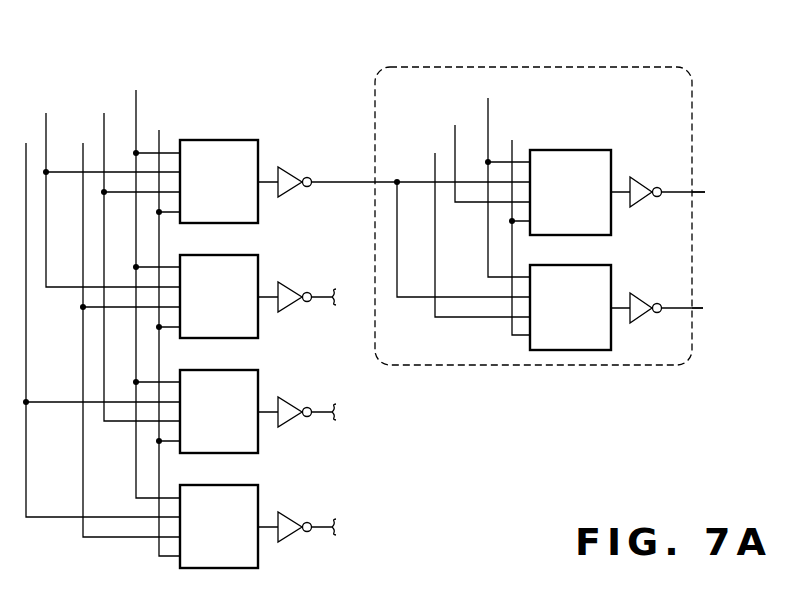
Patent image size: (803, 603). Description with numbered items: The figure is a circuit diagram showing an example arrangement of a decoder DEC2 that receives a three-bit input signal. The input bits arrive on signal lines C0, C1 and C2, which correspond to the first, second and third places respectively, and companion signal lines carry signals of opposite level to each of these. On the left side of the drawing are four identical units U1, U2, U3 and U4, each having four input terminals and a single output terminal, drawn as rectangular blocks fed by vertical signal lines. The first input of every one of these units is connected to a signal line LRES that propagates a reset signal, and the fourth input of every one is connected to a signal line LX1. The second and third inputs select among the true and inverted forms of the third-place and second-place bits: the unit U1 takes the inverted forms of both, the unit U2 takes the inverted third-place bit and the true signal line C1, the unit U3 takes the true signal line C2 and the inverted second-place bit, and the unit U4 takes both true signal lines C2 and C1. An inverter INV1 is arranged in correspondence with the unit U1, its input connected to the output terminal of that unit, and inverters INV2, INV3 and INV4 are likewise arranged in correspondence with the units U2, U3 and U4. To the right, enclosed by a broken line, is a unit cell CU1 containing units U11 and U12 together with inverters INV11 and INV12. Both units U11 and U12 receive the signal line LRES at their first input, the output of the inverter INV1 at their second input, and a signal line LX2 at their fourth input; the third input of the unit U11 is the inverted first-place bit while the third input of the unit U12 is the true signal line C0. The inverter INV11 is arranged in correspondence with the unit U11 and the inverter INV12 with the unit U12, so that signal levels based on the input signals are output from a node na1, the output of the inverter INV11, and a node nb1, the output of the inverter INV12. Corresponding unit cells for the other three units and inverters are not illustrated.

The decoder DEC2 is at (310, 101).
The unit cell CU1 is at (670, 63).
The unit U1 is at (220, 170).
The unit U2 is at (220, 285).
The unit U3 is at (220, 400).
The unit U4 is at (220, 515).
The inverter INV1 is at (394, 170).
The inverter INV2 is at (297, 285).
The inverter INV3 is at (297, 400).
The inverter INV4 is at (297, 515).
The unit U11 is at (578, 181).
The unit U12 is at (578, 296).
The inverter INV11 is at (658, 180).
The inverter INV12 is at (657, 296).
The signal line LRES is at (319, 281).
The signal line C2 is at (96, 318).
The signal line C1 is at (125, 328).
The signal line LX1 is at (160, 330).
The signal line C0 is at (476, 223).
The signal line LX2 is at (510, 227).
The node na1 is at (720, 193).
The node nb1 is at (719, 308).